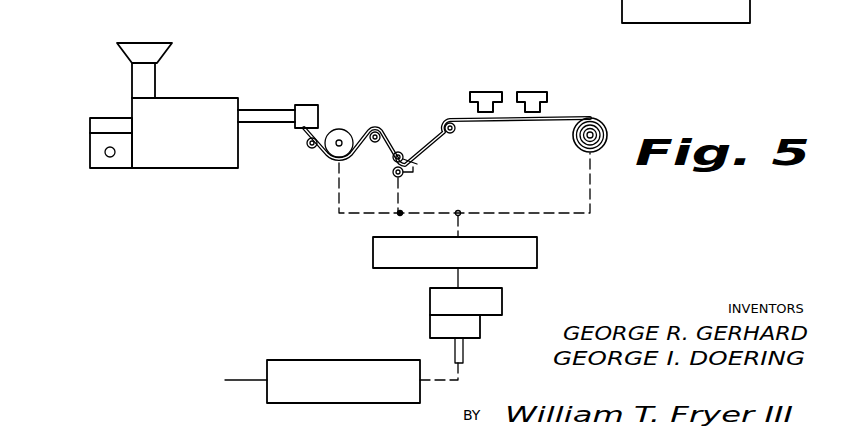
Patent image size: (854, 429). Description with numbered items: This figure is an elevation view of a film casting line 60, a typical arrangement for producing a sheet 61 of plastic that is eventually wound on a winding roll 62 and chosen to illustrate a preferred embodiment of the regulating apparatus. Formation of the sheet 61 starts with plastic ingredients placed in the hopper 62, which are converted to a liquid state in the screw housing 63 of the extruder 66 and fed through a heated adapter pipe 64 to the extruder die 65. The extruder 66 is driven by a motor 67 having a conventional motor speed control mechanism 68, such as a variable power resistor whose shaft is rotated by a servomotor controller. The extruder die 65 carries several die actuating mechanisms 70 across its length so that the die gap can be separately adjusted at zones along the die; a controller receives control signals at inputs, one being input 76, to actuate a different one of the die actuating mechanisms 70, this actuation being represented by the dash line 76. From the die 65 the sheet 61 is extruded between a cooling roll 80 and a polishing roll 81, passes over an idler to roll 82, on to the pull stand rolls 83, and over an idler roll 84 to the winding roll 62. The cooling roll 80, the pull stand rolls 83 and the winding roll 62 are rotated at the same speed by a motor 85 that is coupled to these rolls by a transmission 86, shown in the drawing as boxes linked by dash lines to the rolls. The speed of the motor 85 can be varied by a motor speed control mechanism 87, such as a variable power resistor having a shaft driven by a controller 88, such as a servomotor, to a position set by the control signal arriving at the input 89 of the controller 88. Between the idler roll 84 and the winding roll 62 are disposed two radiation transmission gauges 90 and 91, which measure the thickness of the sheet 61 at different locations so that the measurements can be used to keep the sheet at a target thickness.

The film casting line 60 is at (310, 246).
The sheet 61 is at (433, 137).
The winding roll 62 is at (135, 42).
The screw housing 63 is at (197, 98).
The heated adapter pipe 64 is at (265, 110).
The extruder die 65 is at (310, 108).
The extruder 66 is at (118, 105).
The motor 67 is at (92, 118).
The motor speed control mechanism 68 is at (90, 151).
The die actuating mechanisms 70 is at (320, 124).
The input 76 is at (750, 10).
The cooling roll 80 is at (346, 136).
The polishing roll 81 is at (307, 147).
The roll 82 is at (381, 134).
The pull stand rolls 83 is at (404, 172).
The idler roll 84 is at (453, 131).
The motor 85 is at (502, 293).
The transmission 86 is at (537, 245).
The motor speed control mechanism 87 is at (480, 330).
The controller 88 is at (380, 360).
The input 89 is at (245, 373).
The radiation transmission gauge 90 is at (507, 76).
The radiation transmission gauge 91 is at (528, 90).